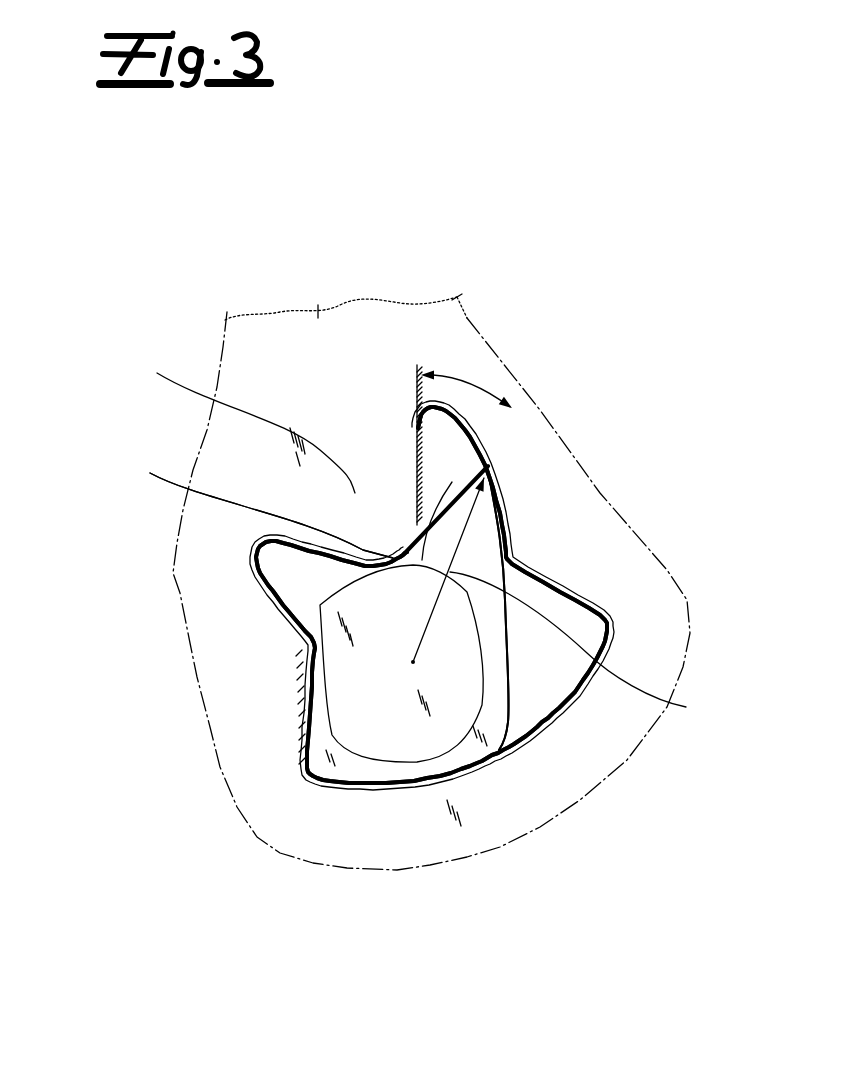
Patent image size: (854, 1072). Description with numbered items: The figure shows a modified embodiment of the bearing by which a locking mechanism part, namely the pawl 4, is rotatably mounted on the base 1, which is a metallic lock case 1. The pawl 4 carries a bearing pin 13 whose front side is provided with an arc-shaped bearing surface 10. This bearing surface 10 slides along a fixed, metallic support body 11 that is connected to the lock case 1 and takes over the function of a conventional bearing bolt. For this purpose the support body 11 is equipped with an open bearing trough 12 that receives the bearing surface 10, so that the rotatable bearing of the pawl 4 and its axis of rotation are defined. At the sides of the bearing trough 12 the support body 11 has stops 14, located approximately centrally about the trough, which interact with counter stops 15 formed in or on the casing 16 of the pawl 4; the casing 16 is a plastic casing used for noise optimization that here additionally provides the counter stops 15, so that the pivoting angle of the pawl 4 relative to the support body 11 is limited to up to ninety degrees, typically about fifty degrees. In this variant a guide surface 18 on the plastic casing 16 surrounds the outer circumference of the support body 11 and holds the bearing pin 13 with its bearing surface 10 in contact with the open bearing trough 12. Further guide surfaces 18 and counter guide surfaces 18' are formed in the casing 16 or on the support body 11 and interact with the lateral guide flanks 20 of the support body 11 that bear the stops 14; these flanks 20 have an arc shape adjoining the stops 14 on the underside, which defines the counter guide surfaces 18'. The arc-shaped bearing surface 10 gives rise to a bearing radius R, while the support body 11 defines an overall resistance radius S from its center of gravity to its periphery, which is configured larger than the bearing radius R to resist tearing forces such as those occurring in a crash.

The base 1 is at (405, 912).
The pawl 4 is at (385, 295).
The bearing surface 10 is at (252, 499).
The support body 11 is at (348, 732).
The bearing trough 12 is at (252, 499).
The bearing pin 13 is at (245, 413).
The stop 14 is at (450, 476).
The counter stop 15 is at (428, 457).
The casing 16 is at (463, 306).
The guide surface 18 is at (410, 616).
The counter guide surface 18' is at (410, 616).
The guide flank 20 is at (500, 492).
The bearing radius R is at (396, 545).
The resistance radius S is at (686, 707).